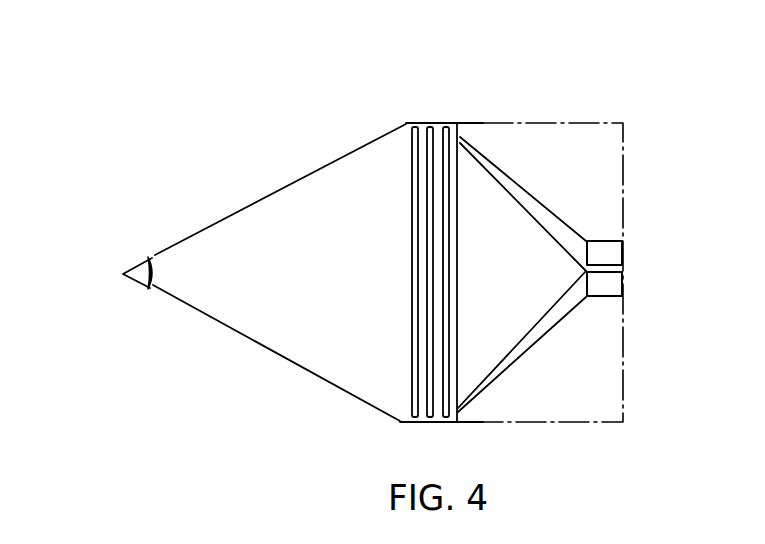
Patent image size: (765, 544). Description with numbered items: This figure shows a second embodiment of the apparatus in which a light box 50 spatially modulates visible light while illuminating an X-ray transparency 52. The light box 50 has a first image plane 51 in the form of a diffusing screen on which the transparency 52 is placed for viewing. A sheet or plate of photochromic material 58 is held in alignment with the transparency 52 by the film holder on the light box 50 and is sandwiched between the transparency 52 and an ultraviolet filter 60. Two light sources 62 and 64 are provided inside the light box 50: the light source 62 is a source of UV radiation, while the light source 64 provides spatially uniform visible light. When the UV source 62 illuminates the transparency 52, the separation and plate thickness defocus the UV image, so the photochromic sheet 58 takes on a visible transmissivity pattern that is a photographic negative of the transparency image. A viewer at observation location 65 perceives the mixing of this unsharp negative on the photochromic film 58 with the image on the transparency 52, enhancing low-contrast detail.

The light box 50 is at (545, 123).
The first image plane 51 is at (452, 423).
The X-ray transparency 52 is at (446, 127).
The photochromic material sheet 58 is at (431, 127).
The ultraviolet filter 60 is at (412, 230).
The UV light source 62 is at (618, 255).
The visible light source 64 is at (619, 278).
The observation location 65 is at (141, 262).